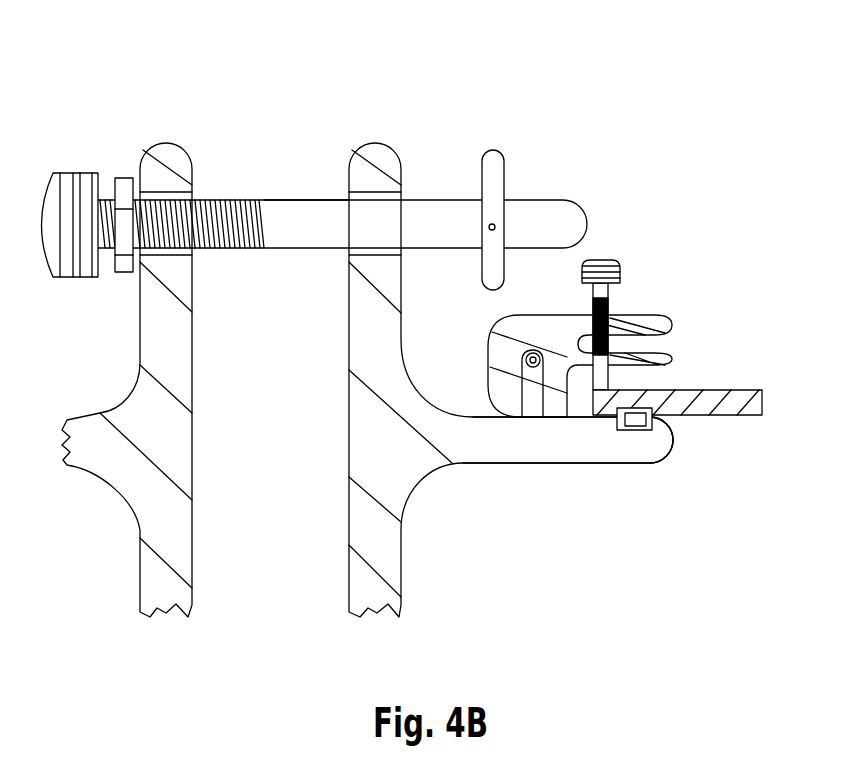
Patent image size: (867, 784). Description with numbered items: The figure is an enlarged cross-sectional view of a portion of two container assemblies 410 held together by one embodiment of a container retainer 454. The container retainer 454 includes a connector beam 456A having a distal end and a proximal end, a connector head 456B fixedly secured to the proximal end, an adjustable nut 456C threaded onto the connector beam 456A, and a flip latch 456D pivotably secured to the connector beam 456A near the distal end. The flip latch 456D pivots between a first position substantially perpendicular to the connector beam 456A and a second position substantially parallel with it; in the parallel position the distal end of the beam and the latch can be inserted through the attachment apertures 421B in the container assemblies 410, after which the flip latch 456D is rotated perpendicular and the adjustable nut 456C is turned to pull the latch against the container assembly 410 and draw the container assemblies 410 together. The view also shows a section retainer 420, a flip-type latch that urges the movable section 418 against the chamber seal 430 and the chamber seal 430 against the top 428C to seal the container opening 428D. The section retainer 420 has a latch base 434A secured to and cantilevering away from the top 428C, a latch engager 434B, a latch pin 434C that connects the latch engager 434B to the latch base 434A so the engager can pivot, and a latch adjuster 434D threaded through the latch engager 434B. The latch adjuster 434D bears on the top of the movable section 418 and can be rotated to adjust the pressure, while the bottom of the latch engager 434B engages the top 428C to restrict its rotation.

The container assembly 410 is at (170, 141).
The connector head 456B is at (73, 173).
The adjustable nut 456C is at (128, 178).
The connector beam 456A is at (290, 212).
The container retainer 454 is at (307, 196).
The attachment aperture 421B is at (370, 192).
The flip latch 456D is at (497, 152).
The latch adjuster 434D is at (600, 258).
The section retainer 420 is at (521, 315).
The latch engager 434B is at (650, 323).
The latch pin 434C is at (526, 360).
The latch base 434A is at (530, 394).
The movable section 418 is at (712, 392).
The chamber seal 430 is at (628, 430).
The top 428C is at (508, 445).
The container opening 428D is at (717, 440).